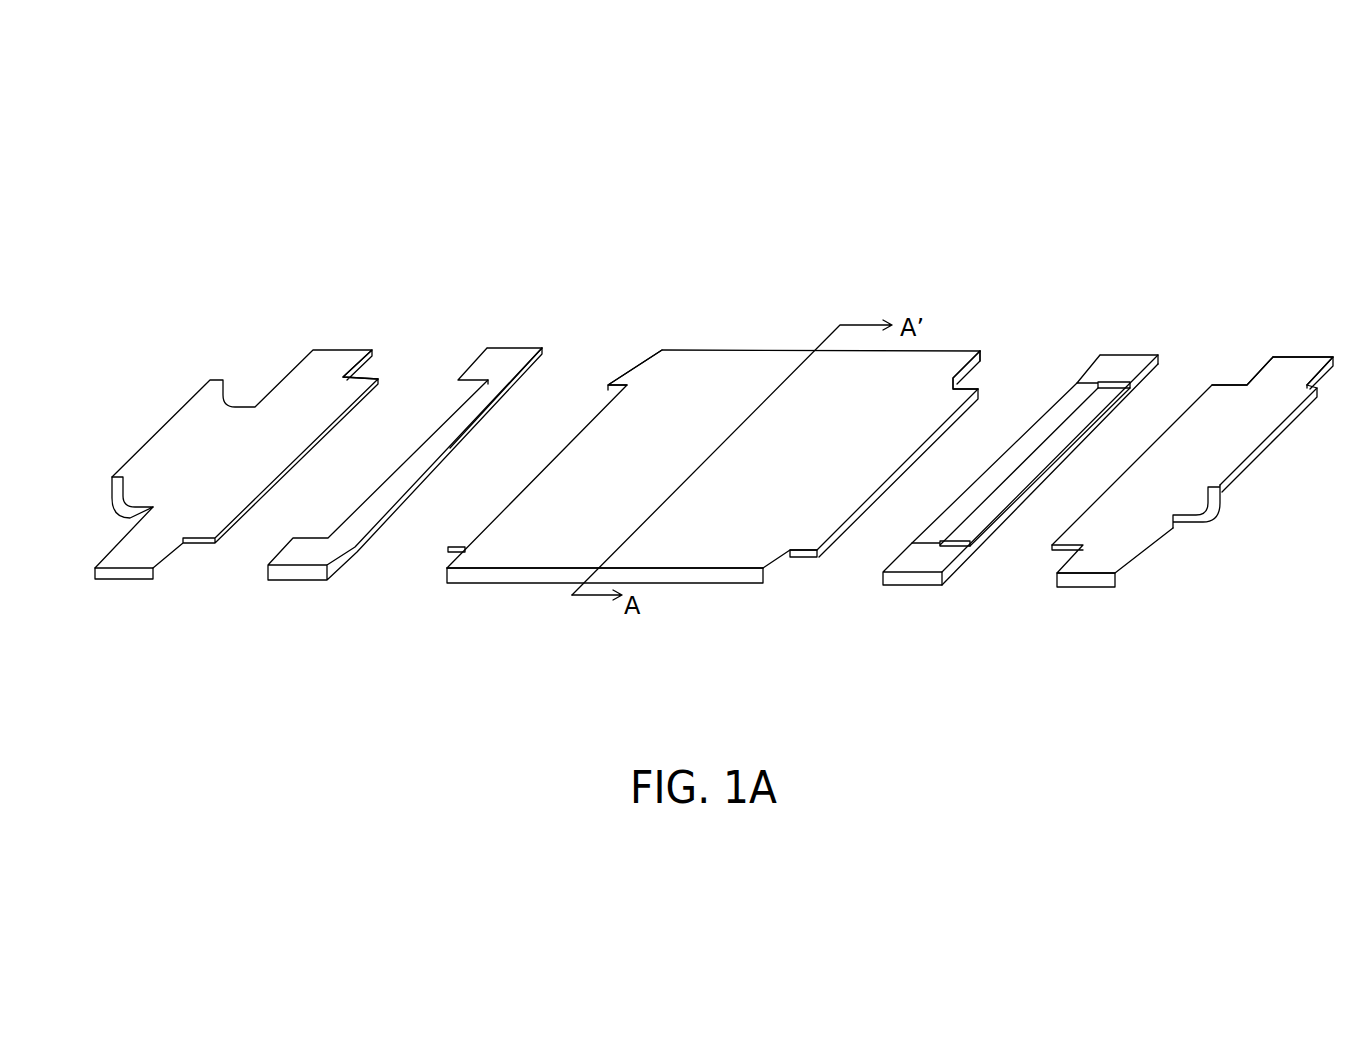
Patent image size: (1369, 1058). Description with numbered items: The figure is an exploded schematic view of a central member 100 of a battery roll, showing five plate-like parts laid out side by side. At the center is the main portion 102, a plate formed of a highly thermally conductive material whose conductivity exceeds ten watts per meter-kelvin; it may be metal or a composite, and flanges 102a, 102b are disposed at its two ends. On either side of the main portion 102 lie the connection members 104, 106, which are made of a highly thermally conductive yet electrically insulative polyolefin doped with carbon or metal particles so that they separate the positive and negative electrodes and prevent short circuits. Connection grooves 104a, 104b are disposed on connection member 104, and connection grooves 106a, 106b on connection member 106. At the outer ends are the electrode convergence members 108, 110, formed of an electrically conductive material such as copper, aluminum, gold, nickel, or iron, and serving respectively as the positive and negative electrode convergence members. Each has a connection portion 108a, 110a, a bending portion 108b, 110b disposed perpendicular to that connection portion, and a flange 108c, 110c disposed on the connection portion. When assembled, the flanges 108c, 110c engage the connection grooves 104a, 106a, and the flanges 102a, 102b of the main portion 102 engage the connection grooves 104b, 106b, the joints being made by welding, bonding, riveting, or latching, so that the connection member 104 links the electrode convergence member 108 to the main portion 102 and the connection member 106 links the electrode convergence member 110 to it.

The central member 100 is at (762, 319).
The main portion 102 is at (688, 583).
The flange 102a is at (950, 395).
The flange 102b is at (605, 386).
The connection member 104 is at (915, 586).
The connection groove 104a is at (985, 532).
The connection groove 104b is at (930, 513).
The connection member 106 is at (298, 580).
The connection groove 106a is at (458, 395).
The connection groove 106b is at (512, 410).
The electrode convergence member 108 is at (1340, 275).
The connection portion 108a is at (1273, 385).
The bending portion 108b is at (1305, 388).
The flange 108c is at (1212, 396).
The electrode convergence member 110 is at (413, 283).
The connection portion 110a is at (318, 368).
The bending portion 110b is at (210, 377).
The flange 110c is at (372, 372).